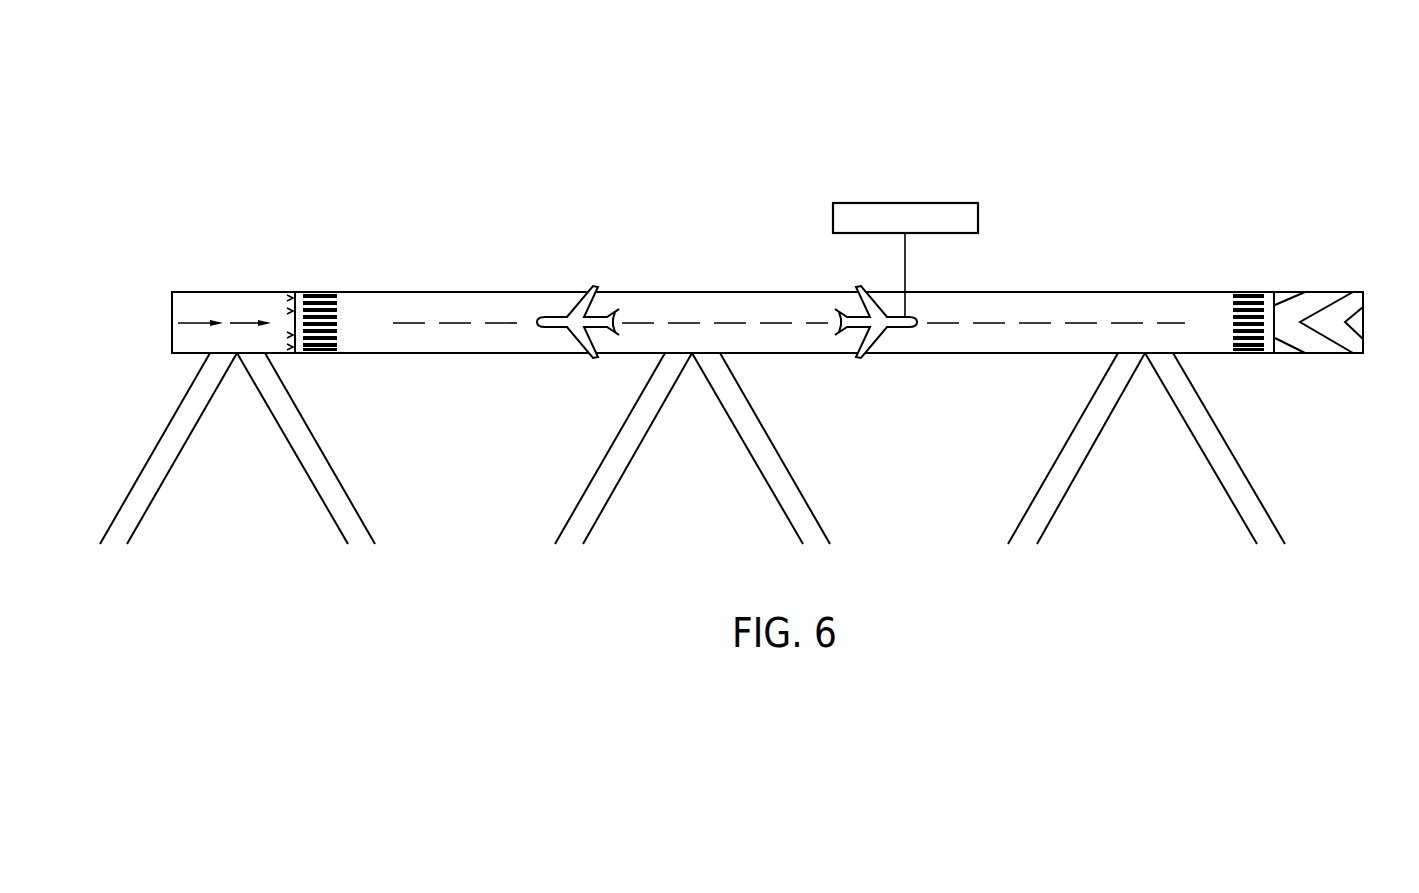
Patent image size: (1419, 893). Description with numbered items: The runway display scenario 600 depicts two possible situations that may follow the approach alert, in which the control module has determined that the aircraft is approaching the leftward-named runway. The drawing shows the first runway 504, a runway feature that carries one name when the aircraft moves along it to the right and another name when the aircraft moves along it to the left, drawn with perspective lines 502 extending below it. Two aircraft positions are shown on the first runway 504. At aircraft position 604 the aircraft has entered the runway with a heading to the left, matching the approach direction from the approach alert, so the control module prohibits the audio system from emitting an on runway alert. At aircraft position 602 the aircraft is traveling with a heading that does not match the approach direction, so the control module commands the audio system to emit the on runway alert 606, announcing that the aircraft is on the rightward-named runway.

The runway display / situational awareness graphic 600 is at (731, 293).
The perspective approach lines 502 is at (804, 522).
The first runway 504 is at (1180, 292).
The aircraft position 602 is at (893, 327).
The aircraft position 604 is at (553, 327).
The on runway alert 606 is at (978, 219).